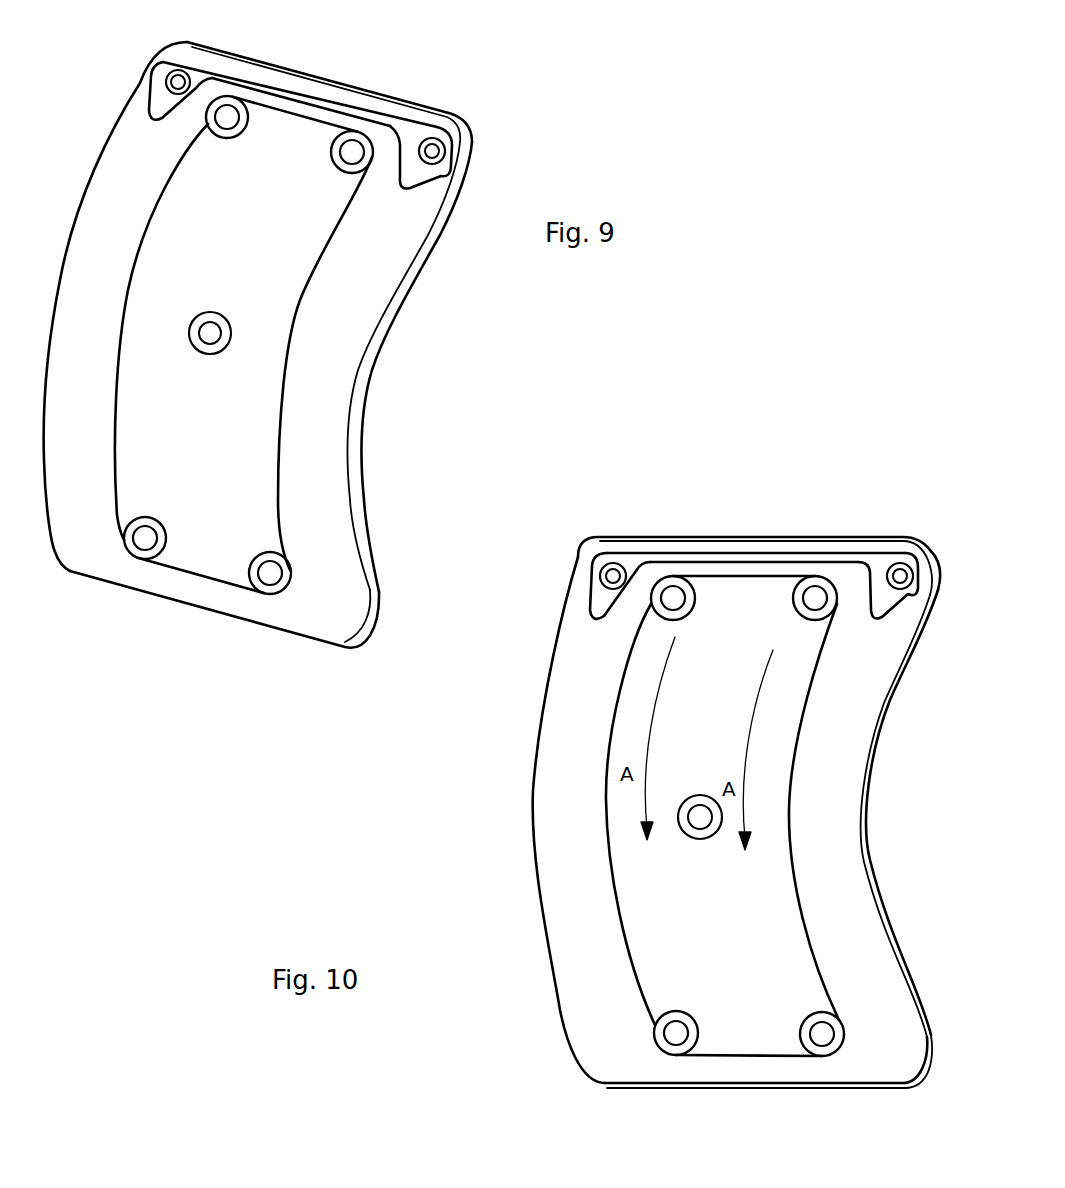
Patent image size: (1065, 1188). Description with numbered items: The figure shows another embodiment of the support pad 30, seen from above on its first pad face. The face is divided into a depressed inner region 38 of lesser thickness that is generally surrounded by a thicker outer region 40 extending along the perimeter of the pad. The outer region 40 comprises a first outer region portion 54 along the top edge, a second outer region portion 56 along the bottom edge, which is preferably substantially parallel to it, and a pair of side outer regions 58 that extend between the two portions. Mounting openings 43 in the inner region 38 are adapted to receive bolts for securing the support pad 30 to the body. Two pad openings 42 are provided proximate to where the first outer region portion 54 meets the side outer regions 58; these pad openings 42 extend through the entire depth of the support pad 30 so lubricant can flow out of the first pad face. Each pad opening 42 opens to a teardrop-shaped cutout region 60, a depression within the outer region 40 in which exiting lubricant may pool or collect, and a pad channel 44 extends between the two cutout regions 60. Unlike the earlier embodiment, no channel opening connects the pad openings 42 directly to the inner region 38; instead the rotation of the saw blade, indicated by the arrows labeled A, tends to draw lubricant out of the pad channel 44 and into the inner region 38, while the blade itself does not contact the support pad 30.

In FIG. 9, the support pad 30 is at (407, 283).
In FIG. 10, the support pad 30 is at (535, 745).
In FIG. 9, the inner region 38 is at (205, 522).
In FIG. 10, the inner region 38 is at (742, 1035).
In FIG. 9, the outer region 40 is at (338, 382).
In FIG. 10, the outer region 40 is at (560, 827).
In FIG. 9, the pad openings 42 is at (182, 80).
In FIG. 10, the pad openings 42 is at (613, 573).
In FIG. 9, the mounting openings 43 is at (273, 573).
In FIG. 10, the mounting openings 43 is at (657, 1037).
In FIG. 9, the pad channel 44 is at (277, 92).
In FIG. 10, the pad channel 44 is at (710, 557).
In FIG. 9, the first outer region portion 54 is at (340, 97).
In FIG. 10, the first outer region portion 54 is at (775, 543).
In FIG. 9, the second outer region portion 56 is at (167, 587).
In FIG. 10, the second outer region portion 56 is at (693, 1075).
In FIG. 9, the side outer regions 58 is at (102, 193).
In FIG. 10, the side outer regions 58 is at (560, 878).
In FIG. 9, the cutout regions 60 is at (163, 103).
In FIG. 10, the cutout regions 60 is at (602, 600).